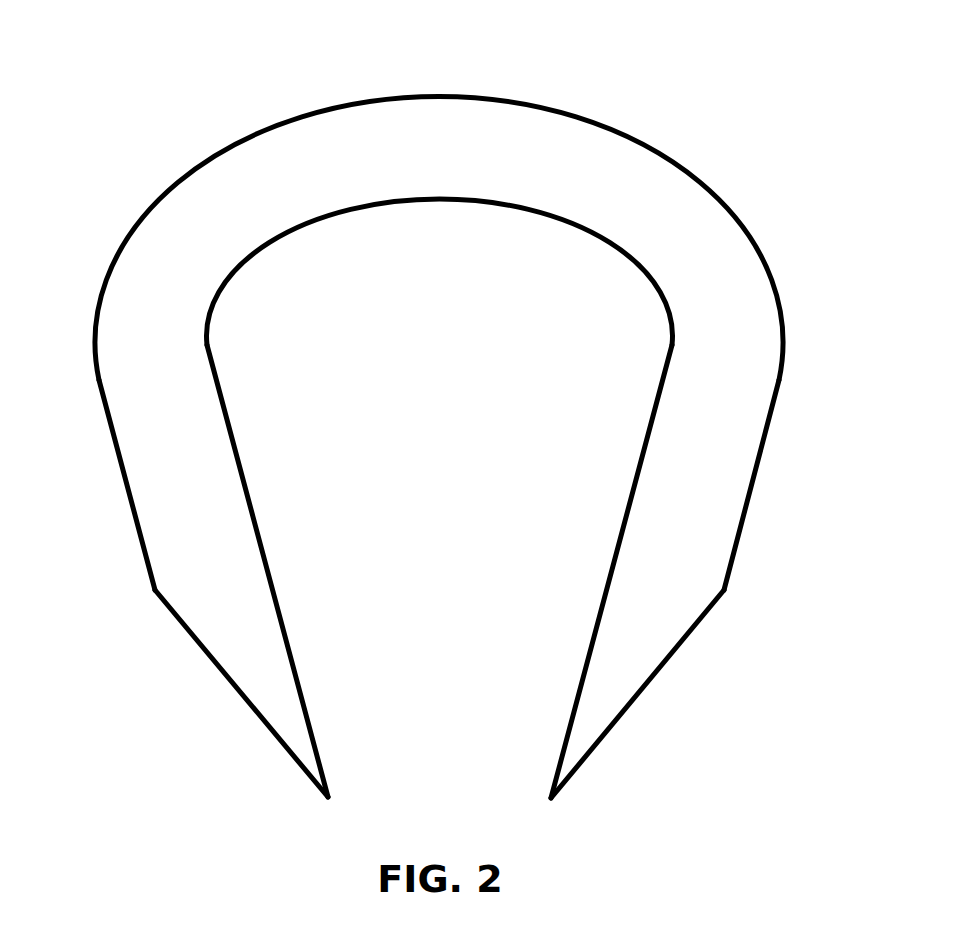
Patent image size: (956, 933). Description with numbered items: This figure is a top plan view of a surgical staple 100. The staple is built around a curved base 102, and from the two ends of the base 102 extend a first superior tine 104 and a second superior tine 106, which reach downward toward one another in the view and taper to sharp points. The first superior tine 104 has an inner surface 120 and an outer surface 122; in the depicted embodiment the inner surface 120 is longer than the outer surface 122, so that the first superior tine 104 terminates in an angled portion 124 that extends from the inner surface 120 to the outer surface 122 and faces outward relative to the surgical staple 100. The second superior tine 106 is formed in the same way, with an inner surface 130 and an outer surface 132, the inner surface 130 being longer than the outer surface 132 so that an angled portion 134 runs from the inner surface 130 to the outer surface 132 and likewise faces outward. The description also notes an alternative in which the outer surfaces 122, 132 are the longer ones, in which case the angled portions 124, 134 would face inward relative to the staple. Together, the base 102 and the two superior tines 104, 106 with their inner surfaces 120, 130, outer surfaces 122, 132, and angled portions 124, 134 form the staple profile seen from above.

The surgical staple 100 is at (306, 103).
The base 102 is at (438, 112).
The first superior tine 104 is at (225, 640).
The second superior tine 106 is at (655, 640).
The inner surface 120 is at (250, 497).
The outer surface 122 is at (132, 517).
The angled portion 124 is at (268, 735).
The inner surface 130 is at (630, 497).
The outer surface 132 is at (747, 518).
The angled portion 134 is at (608, 735).